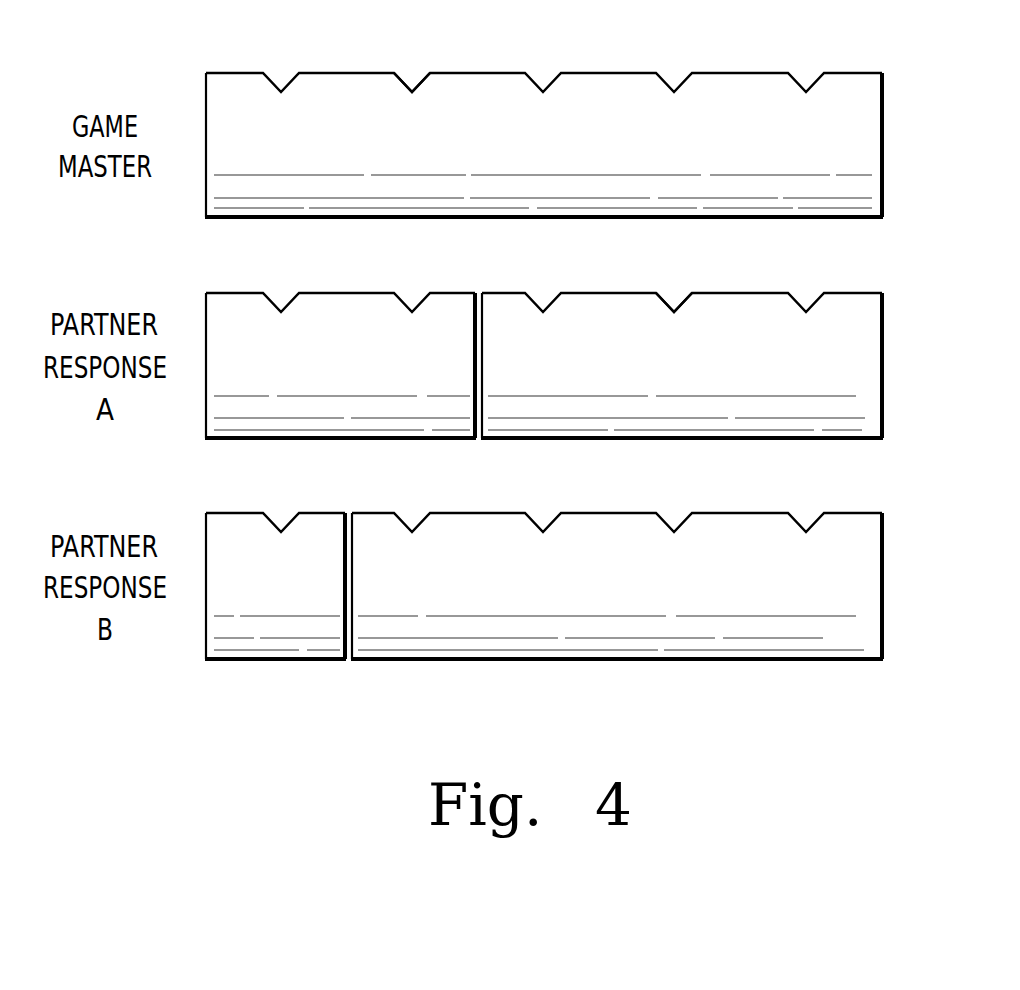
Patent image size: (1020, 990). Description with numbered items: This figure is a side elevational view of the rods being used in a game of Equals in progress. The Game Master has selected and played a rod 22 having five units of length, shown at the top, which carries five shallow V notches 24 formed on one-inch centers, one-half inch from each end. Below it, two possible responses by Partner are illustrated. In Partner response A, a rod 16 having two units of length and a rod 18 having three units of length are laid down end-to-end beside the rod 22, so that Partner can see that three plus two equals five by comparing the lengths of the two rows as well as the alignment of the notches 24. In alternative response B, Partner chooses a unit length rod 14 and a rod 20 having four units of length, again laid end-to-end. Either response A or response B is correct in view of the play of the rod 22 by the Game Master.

The rod 14 is at (323, 513).
The rod 16 is at (453, 293).
The rod 18 is at (848, 293).
The rod 20 is at (848, 513).
The rod 22 is at (848, 73).
The notches 24 is at (416, 78).